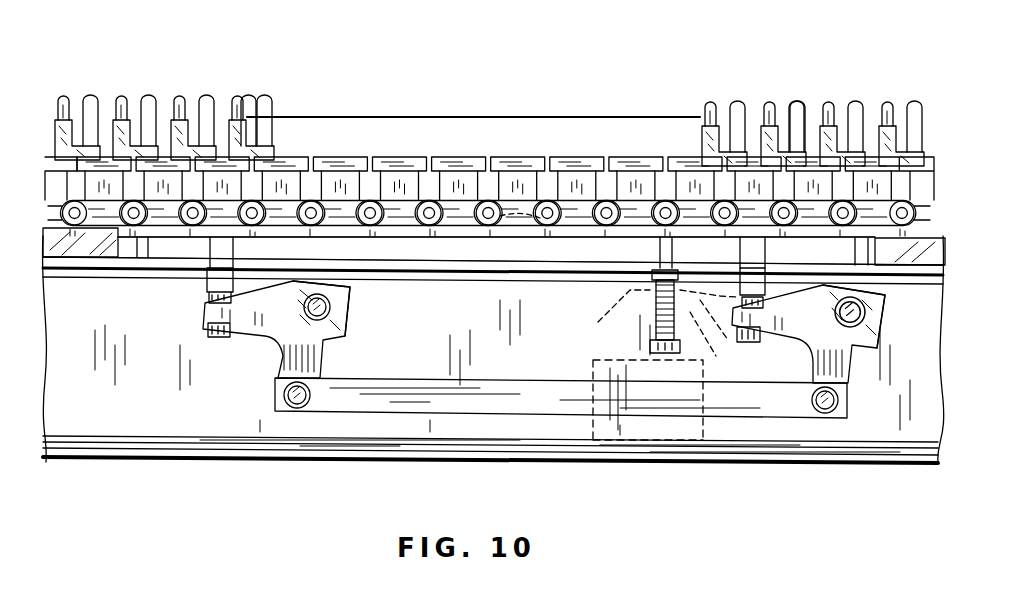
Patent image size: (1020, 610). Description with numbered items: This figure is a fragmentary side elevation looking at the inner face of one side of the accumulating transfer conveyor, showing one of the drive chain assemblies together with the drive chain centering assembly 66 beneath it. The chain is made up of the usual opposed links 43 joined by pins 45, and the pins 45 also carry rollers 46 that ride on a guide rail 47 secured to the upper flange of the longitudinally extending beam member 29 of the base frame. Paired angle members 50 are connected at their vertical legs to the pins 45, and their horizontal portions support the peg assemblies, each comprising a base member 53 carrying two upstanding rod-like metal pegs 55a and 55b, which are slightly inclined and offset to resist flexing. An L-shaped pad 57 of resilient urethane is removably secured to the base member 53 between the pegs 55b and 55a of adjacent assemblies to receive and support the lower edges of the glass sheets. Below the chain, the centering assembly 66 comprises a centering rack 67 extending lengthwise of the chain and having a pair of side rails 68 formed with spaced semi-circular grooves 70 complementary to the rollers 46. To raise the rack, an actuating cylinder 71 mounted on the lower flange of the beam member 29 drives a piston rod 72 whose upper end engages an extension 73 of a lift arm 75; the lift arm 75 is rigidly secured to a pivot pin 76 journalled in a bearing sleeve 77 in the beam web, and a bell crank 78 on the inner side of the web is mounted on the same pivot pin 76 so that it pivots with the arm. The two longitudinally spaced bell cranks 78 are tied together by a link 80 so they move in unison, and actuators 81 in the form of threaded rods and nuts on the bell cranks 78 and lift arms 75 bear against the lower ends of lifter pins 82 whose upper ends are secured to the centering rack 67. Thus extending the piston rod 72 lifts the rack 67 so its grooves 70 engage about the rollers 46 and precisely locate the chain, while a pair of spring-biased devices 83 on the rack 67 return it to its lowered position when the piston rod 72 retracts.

The beam members 29 is at (207, 462).
The links 43 is at (412, 208).
The pins 45 is at (488, 208).
The rollers 46 is at (308, 198).
The guide rails 47 is at (85, 252).
The angle members 50 is at (630, 198).
The base member 53 is at (560, 162).
The peg 55a is at (243, 98).
The peg 55b is at (204, 97).
The L-shaped pad 57 is at (258, 124).
The drive chain centering assembly 66 is at (213, 370).
The centering rack 67 is at (470, 245).
The side rails 68 is at (507, 234).
The grooves 70 is at (580, 212).
The actuating cylinder 71 is at (618, 445).
The piston rod 72 is at (645, 341).
The extension 73 is at (628, 290).
The lift arm 75 is at (690, 312).
The pivot pin 76 is at (322, 314).
The bearing sleeve 77 is at (352, 295).
The bell crank 78 is at (280, 352).
The link 80 is at (425, 400).
The actuators 81 is at (213, 300).
The lifter pins 82 is at (207, 281).
The spring-biased devices 83 is at (668, 362).